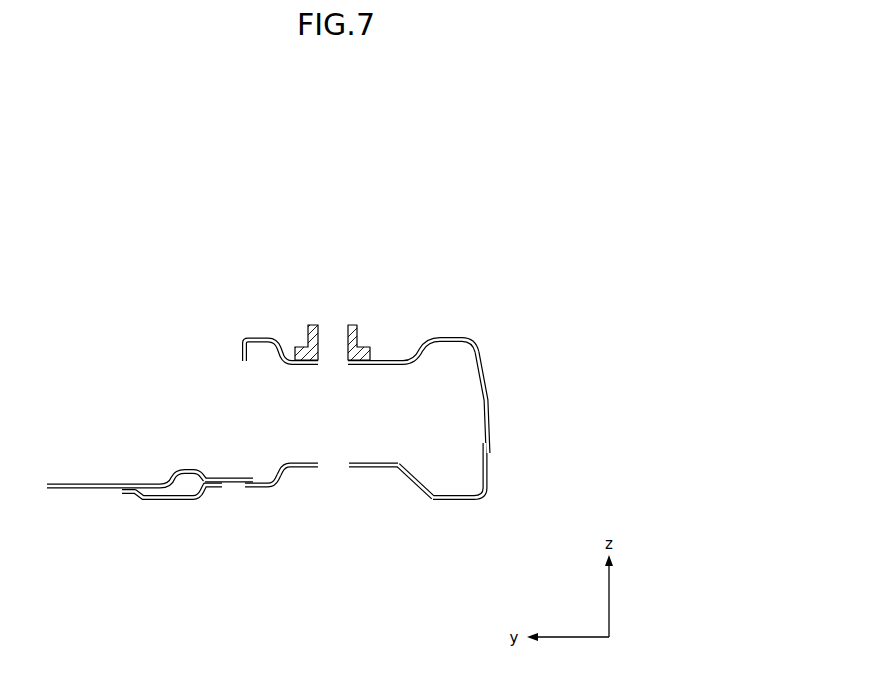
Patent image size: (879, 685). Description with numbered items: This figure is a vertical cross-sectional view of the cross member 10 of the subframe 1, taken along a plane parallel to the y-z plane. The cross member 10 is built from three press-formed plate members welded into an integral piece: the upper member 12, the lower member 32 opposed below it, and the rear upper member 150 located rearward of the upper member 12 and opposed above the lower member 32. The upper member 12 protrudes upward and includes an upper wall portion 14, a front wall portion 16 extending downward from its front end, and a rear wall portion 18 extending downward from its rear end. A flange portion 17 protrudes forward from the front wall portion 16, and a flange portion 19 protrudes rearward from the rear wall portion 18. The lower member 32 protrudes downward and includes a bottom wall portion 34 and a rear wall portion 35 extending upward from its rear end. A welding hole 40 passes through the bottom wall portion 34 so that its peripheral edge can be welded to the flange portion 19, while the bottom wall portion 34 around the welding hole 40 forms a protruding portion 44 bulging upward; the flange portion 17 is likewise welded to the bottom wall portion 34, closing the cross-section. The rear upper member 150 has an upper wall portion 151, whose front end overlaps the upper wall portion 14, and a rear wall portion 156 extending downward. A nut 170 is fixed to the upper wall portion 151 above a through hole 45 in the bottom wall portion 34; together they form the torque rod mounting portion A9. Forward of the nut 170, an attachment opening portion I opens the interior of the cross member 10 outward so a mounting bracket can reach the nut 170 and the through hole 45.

The subframe 1 is at (402, 257).
The cross member 10 is at (87, 462).
The upper member 12 is at (61, 476).
The upper wall portion 14 is at (187, 469).
The front wall portion 16 is at (173, 474).
The flange portion 17 is at (128, 488).
The rear wall portion 18 is at (203, 476).
The flange portion 19 is at (232, 479).
The lower member 32 is at (400, 503).
The bottom wall portion 34 is at (467, 501).
The rear wall portion 35 is at (488, 477).
The welding hole 40 is at (243, 488).
The protruding portion 44 is at (366, 469).
The through hole 45 is at (321, 469).
The rear upper member 150 is at (468, 322).
The upper wall portion 151 is at (432, 335).
The rear wall portion 156 is at (487, 407).
The nut 170 is at (353, 328).
The torque rod mounting portion A9 is at (308, 312).
The attachment opening portion I is at (250, 402).